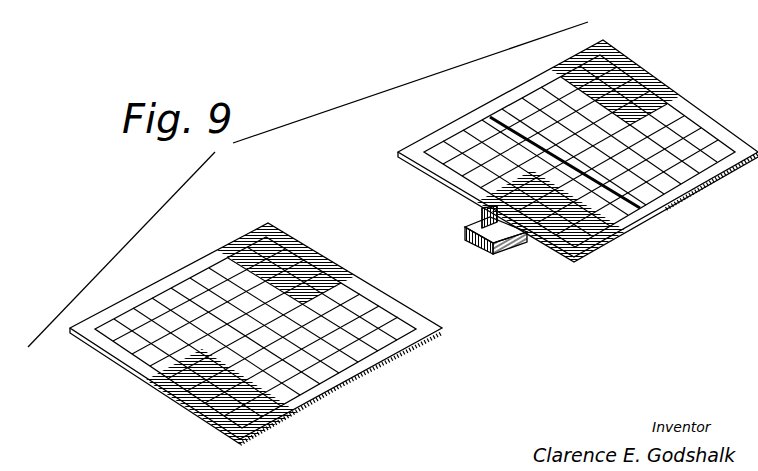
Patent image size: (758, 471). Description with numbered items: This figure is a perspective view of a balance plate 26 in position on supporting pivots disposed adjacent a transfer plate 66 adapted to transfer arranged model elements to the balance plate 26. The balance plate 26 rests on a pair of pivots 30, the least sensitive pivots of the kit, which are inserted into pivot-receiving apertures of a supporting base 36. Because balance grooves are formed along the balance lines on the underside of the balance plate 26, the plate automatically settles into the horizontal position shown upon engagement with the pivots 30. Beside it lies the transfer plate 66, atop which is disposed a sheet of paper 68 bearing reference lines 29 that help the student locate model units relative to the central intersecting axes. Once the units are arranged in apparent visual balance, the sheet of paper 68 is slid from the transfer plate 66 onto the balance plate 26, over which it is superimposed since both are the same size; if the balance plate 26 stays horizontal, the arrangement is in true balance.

The balance plate 26 is at (631, 50).
The pivots 30 is at (478, 241).
The supporting base 36 is at (505, 246).
The reference lines 29 is at (207, 387).
The transfer plate 66 is at (273, 420).
The sheet of paper 68 is at (387, 338).